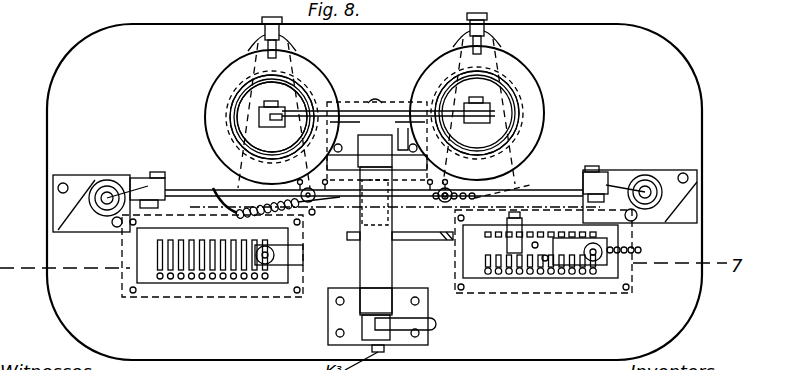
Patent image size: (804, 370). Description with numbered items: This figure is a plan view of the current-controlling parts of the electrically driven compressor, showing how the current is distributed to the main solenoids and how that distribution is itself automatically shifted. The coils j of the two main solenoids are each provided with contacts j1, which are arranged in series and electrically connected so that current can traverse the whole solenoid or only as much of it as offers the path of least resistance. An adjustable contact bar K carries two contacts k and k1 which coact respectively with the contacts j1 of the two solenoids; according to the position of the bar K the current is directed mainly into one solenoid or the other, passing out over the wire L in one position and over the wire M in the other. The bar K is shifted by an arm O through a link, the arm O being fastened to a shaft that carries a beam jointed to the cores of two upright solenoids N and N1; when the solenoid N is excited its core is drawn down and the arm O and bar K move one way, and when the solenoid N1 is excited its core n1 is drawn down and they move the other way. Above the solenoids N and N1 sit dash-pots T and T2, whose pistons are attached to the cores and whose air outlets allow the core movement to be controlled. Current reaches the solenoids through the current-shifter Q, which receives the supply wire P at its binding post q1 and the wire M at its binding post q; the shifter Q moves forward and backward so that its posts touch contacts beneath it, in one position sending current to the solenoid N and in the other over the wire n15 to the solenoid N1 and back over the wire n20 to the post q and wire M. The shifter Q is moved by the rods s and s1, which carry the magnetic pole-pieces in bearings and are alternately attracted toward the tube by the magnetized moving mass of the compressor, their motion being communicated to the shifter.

The dash-pot T is at (272, 102).
The dash-pot T2 is at (473, 98).
The upright solenoid N is at (272, 117).
The upright solenoid N1 is at (477, 113).
The wire n15 is at (369, 125).
The wire n20 is at (377, 141).
The core n1 is at (405, 139).
The arm O is at (388, 240).
The adjustable contact bar K is at (343, 258).
The rod s is at (107, 180).
The rod s1 is at (645, 176).
The coil j is at (210, 318).
The contact j1 is at (520, 276).
The contact k is at (303, 262).
The contact k1 is at (600, 262).
The wire M is at (268, 197).
The binding post q is at (300, 194).
The current-shifter Q is at (309, 221).
The binding post q1 is at (440, 222).
The wire P is at (487, 184).
The wire L is at (642, 249).